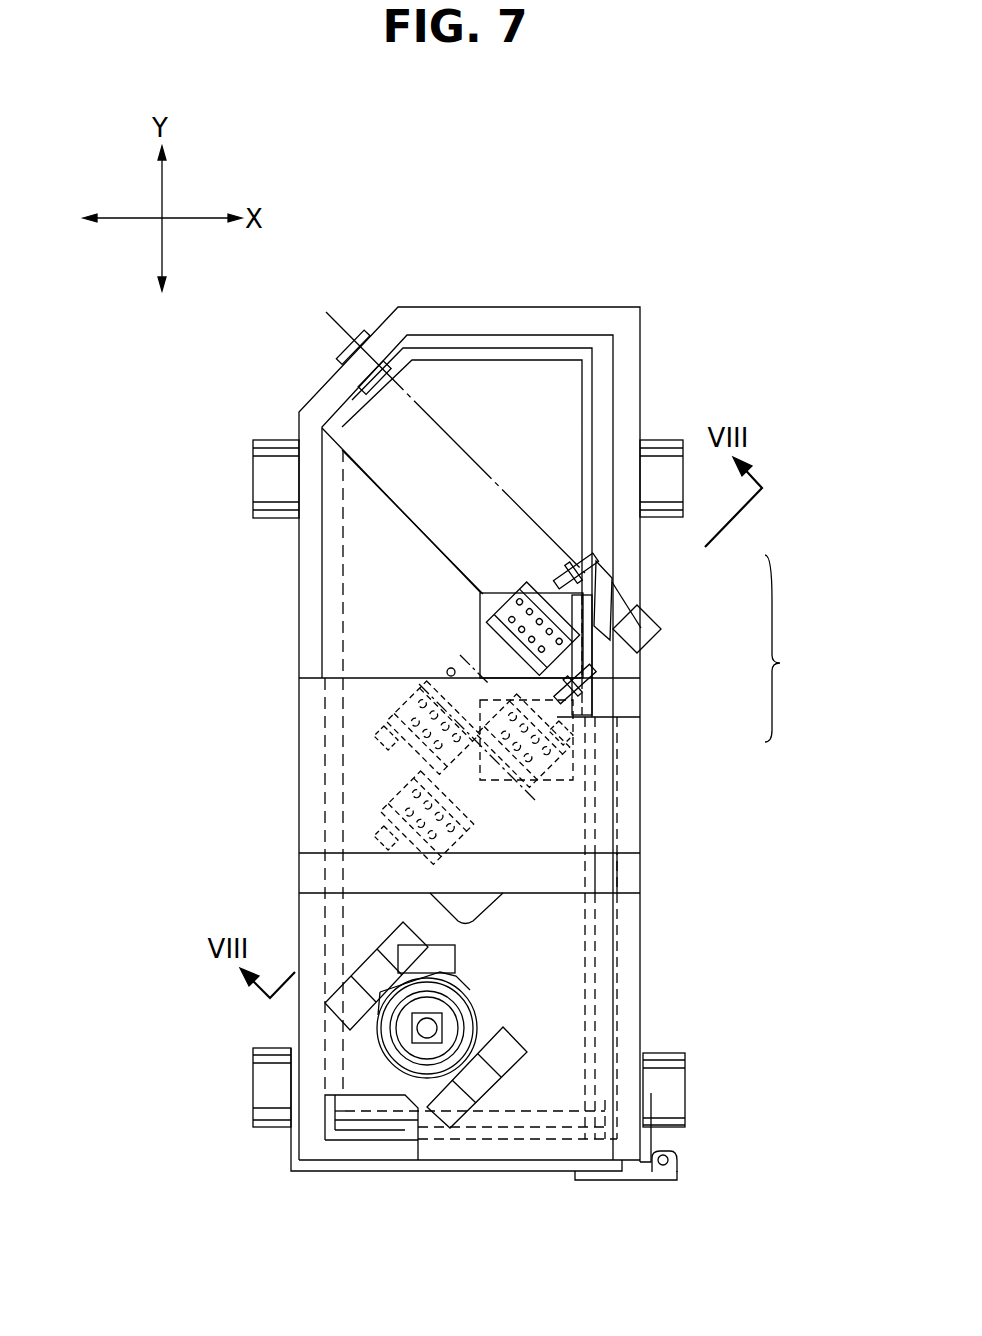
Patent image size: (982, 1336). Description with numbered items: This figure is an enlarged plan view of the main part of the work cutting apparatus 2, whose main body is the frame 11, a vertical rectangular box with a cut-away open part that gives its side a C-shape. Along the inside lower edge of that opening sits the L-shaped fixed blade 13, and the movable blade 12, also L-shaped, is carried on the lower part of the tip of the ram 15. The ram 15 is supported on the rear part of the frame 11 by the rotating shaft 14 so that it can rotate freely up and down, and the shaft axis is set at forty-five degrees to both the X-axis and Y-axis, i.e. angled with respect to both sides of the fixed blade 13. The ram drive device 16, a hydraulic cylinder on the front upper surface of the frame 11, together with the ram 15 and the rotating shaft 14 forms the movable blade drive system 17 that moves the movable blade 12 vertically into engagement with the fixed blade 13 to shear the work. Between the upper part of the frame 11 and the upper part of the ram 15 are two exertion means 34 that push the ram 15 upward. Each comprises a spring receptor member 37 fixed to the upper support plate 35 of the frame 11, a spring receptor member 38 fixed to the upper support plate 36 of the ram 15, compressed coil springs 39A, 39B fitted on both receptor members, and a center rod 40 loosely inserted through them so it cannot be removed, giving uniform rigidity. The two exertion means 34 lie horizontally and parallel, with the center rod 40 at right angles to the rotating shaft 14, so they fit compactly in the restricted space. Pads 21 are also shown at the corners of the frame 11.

The work cutting apparatus 2 is at (222, 458).
The frame 11 is at (299, 658).
The movable blade 12 is at (402, 1131).
The fixed blade 13 is at (348, 1140).
The rotating shaft 14 is at (545, 547).
The ram 15 is at (593, 702).
The ram drive device 16 is at (480, 1013).
The movable blade drive system 17 is at (792, 648).
The mounting pad 21 is at (368, 330).
The exertion means 34 is at (445, 639).
The upper support plate of the frame 35 is at (318, 838).
The upper support plate of the ram 36 is at (487, 592).
The spring receptor member 37 is at (387, 727).
The spring receptor member 38 is at (501, 593).
The compressed coil spring 39A is at (485, 630).
The compressed coil spring 39B is at (485, 640).
The center rod 40 is at (593, 660).